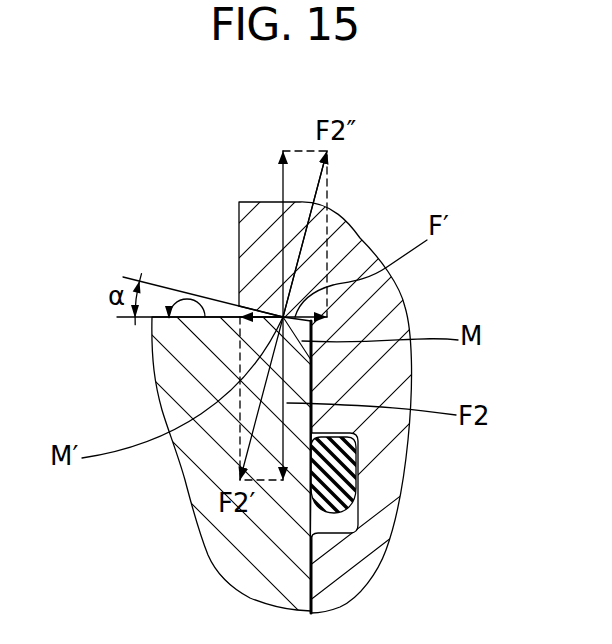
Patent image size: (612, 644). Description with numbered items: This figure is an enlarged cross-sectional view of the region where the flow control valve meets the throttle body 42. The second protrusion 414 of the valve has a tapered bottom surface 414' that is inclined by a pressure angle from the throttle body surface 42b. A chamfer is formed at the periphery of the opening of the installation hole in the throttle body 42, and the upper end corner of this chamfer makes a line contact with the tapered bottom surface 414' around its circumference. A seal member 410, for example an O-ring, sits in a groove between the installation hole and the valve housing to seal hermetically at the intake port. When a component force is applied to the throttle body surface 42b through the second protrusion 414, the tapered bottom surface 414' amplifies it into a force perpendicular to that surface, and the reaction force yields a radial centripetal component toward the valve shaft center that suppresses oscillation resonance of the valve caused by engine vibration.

The second protrusion 414 is at (306, 322).
The tapered bottom surface 414' is at (202, 261).
The throttle body 42 is at (190, 473).
The throttle body surface 42b is at (207, 318).
The seal member 410 is at (337, 480).